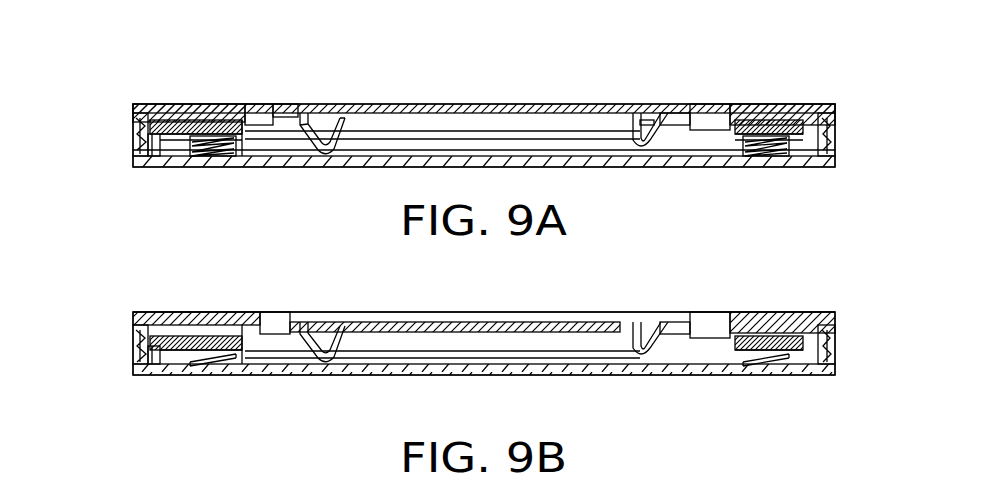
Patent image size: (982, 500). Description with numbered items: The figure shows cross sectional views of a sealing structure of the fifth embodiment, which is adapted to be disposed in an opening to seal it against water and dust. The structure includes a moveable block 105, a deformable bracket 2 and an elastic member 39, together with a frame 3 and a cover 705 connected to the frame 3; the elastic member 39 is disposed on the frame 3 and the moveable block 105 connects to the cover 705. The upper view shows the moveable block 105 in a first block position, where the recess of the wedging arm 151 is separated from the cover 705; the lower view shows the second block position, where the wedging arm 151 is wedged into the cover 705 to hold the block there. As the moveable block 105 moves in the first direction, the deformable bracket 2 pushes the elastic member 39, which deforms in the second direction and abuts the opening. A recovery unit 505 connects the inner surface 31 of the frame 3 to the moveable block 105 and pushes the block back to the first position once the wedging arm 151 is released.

In FIG. 9A, the deformable bracket 2 is at (130, 140).
In FIG. 9B, the deformable bracket 2 is at (130, 348).
In FIG. 9A, the frame 3 is at (300, 167).
In FIG. 9B, the frame 3 is at (300, 375).
In FIG. 9A, the inner surface 31 is at (153, 168).
In FIG. 9B, the inner surface 31 is at (153, 376).
In FIG. 9A, the elastic member 39 is at (836, 132).
In FIG. 9B, the elastic member 39 is at (836, 340).
In FIG. 9A, the moveable block 105 is at (623, 105).
In FIG. 9B, the moveable block 105 is at (612, 318).
In FIG. 9A, the wedging arm 151 is at (665, 107).
In FIG. 9B, the wedging arm 151 is at (668, 313).
In FIG. 9A, the recovery unit 505 is at (215, 168).
In FIG. 9B, the recovery unit 505 is at (215, 376).
In FIG. 9A, the cover 705 is at (765, 105).
In FIG. 9B, the cover 705 is at (765, 313).